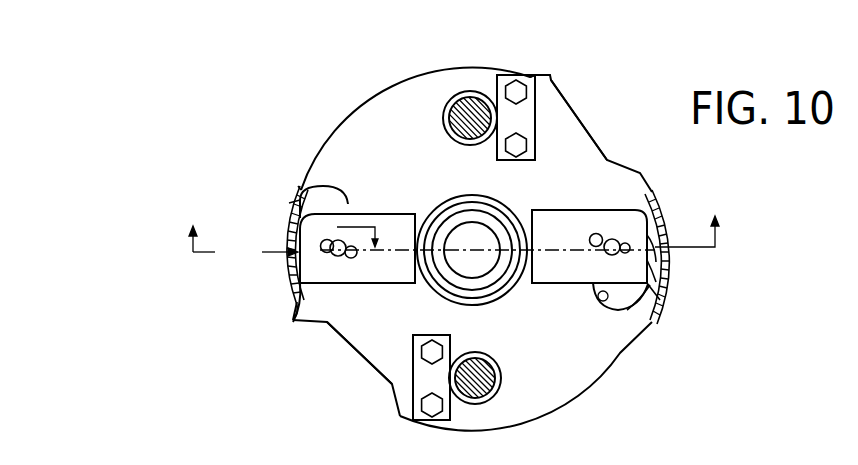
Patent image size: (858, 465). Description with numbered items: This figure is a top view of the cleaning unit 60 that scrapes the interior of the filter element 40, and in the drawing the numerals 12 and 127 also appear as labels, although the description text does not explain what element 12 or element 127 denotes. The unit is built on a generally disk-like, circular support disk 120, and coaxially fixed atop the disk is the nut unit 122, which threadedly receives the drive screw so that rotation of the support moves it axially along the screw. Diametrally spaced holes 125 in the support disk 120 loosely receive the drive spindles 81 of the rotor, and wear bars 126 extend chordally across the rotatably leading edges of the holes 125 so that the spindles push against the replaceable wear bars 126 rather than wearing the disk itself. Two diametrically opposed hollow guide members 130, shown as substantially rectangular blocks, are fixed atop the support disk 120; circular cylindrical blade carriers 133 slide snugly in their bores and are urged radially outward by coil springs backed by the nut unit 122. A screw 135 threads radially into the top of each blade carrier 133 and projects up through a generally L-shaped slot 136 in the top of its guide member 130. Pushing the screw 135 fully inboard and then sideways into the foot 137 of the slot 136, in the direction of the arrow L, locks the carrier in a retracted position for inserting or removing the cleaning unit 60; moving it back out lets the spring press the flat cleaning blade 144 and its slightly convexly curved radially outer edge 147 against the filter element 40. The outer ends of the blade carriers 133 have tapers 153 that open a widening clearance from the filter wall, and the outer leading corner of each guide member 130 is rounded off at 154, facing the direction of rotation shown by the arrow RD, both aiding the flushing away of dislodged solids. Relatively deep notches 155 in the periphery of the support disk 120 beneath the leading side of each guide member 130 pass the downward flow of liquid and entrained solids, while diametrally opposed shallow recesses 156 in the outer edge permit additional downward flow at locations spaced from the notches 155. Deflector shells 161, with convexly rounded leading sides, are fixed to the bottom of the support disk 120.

The direction of feed arrow 12 is at (452, 275).
The filter element 40 is at (663, 190).
The cleaning unit 60 is at (329, 96).
The drive spindles 81 is at (449, 96).
The support disk 120 is at (377, 97).
The nut unit 122 is at (491, 196).
The holes 125 is at (467, 91).
The wear bars 126 is at (536, 73).
The clamping plate 127 is at (520, 75).
The hollow guide members 130 is at (410, 213).
The blade carriers 133 is at (286, 272).
The screw 135 is at (325, 257).
The L-shaped slot 136 is at (296, 323).
The foot 137 is at (347, 258).
The cleaning blade 144 is at (778, 185).
The radially outer edge 147 is at (285, 232).
The tapers 153 is at (676, 258).
The rounded corner 154 is at (289, 200).
The notches 155 is at (349, 203).
The shallow recesses 156 is at (565, 110).
The deflector shells 161 is at (298, 190).
The arrow L is at (370, 242).
The arrow RD is at (597, 415).